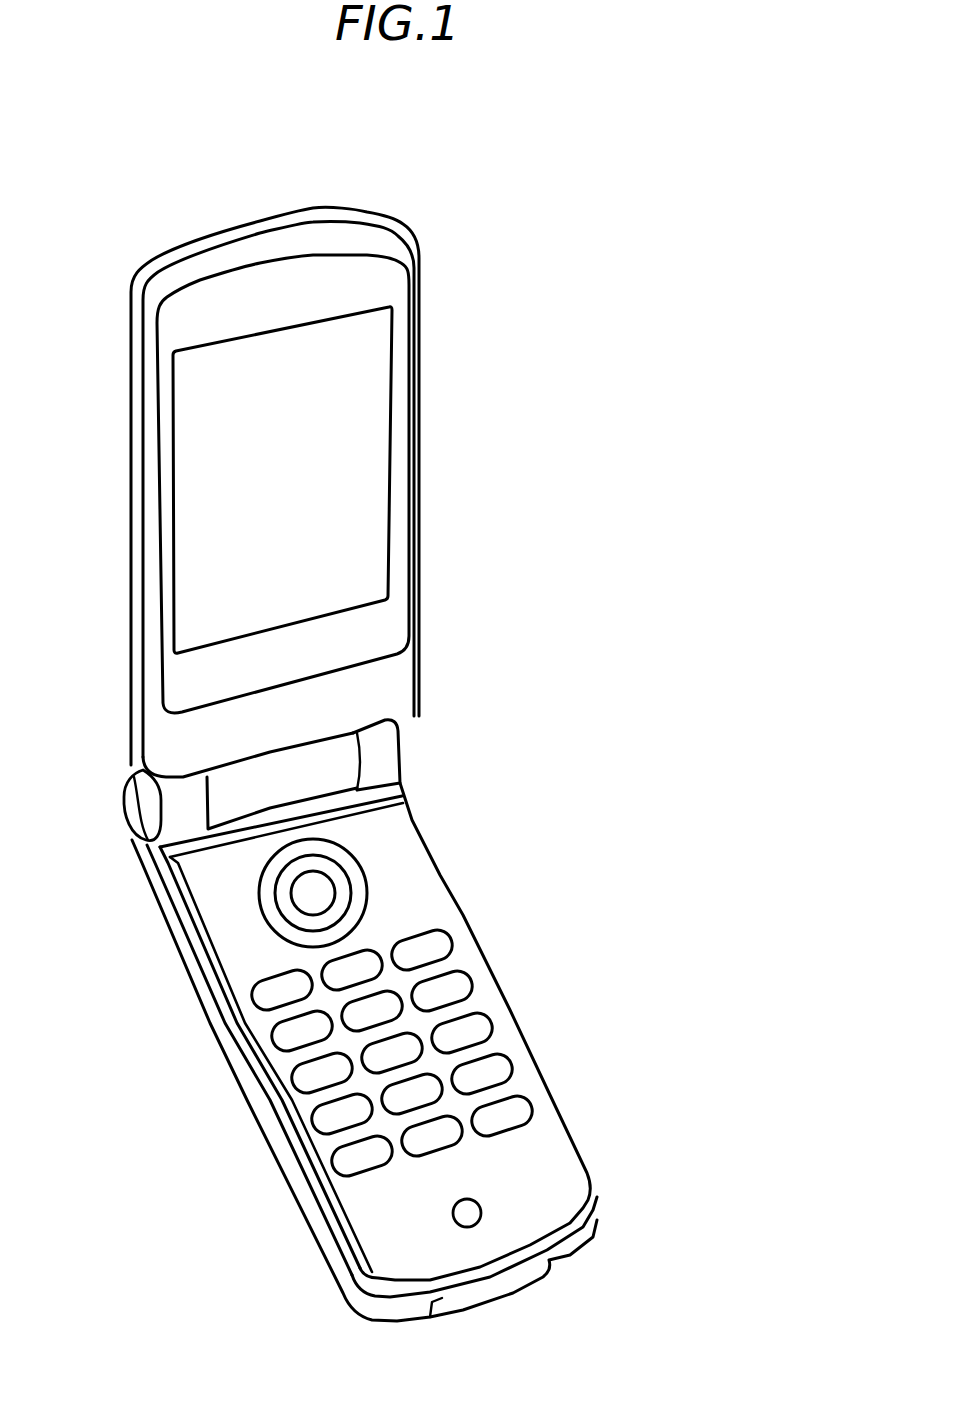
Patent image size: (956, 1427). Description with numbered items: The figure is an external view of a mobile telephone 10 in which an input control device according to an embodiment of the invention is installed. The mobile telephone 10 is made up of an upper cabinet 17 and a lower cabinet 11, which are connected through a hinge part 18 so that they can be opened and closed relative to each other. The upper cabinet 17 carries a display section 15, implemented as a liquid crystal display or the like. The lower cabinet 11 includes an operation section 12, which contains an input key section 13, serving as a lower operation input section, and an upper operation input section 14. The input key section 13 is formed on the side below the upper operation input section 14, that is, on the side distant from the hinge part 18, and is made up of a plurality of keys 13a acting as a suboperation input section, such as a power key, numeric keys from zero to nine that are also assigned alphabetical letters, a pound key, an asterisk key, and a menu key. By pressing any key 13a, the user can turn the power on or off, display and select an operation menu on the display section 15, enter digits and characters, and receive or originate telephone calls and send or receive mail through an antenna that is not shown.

The mobile telephone 10 is at (508, 230).
The lower cabinet 11 is at (580, 1157).
The operation section 12 is at (300, 1300).
The input key section 13 is at (424, 999).
The key 13a is at (454, 898).
The upper operation input section 14 is at (368, 827).
The display section 15 is at (365, 478).
The upper cabinet 17 is at (419, 360).
The hinge part 18 is at (400, 737).